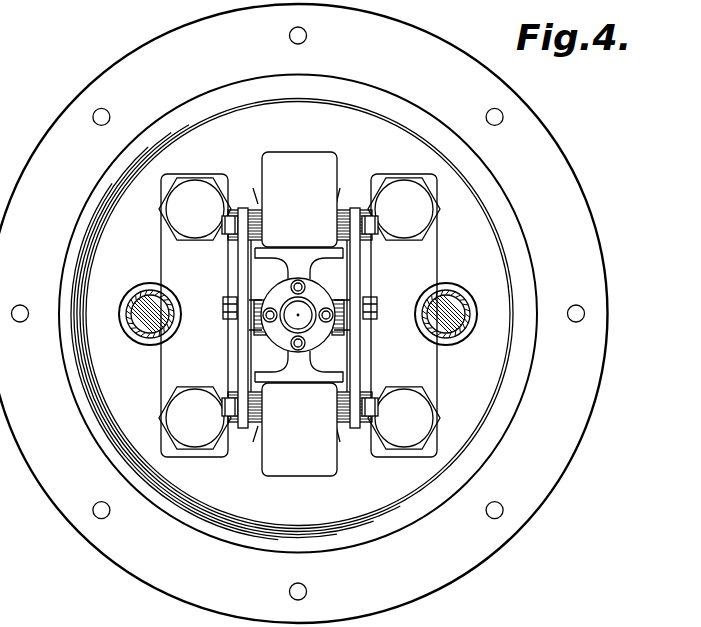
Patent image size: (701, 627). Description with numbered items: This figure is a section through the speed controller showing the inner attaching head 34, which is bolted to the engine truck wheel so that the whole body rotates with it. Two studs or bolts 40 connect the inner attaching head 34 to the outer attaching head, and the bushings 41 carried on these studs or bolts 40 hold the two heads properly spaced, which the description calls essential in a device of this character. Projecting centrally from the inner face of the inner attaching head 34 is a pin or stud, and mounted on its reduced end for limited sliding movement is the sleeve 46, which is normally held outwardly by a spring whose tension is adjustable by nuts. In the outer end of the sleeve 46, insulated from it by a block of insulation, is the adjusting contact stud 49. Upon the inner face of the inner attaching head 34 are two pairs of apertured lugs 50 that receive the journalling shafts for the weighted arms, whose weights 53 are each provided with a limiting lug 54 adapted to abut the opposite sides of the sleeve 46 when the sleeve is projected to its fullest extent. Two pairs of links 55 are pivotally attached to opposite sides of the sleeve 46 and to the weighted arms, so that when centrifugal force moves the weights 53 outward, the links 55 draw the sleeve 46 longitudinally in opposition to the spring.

The inner attaching head 34 is at (133, 402).
The studs or bolts 40 is at (465, 291).
The bushings 41 is at (133, 293).
The sleeve 46 is at (316, 295).
The adjusting contact stud 49 is at (300, 324).
The apertured lugs 50 is at (327, 249).
The weights 53 is at (308, 163).
The limiting lug 54 is at (297, 268).
The links 55 is at (240, 257).